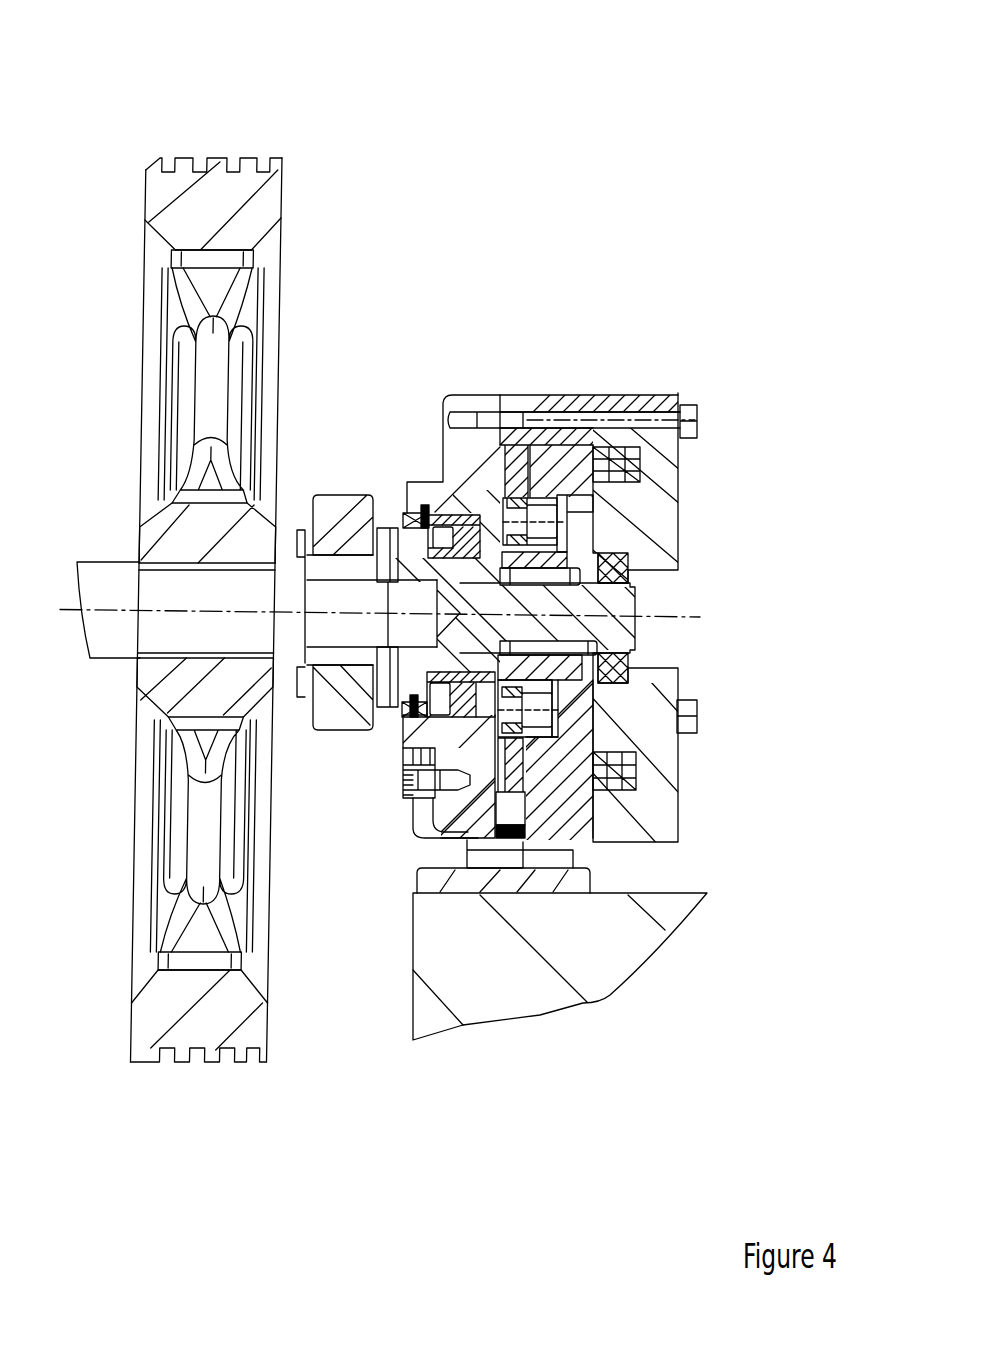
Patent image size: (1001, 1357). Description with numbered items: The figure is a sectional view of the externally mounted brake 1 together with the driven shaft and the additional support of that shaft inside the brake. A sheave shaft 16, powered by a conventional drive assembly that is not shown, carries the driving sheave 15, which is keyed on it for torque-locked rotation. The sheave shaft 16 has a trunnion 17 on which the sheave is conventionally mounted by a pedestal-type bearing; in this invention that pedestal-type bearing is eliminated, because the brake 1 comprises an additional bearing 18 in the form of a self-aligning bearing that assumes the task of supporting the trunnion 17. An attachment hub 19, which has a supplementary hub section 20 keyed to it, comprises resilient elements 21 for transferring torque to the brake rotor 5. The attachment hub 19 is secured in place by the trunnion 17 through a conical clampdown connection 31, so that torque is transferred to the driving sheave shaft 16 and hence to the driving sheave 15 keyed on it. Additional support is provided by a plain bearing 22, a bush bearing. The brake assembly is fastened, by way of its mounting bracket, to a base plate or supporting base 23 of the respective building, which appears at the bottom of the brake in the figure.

The brake 1 is at (645, 393).
The brake rotor 5 is at (460, 512).
The driving sheave 15 is at (208, 196).
The sheave shaft 16 is at (105, 562).
The trunnion 17 is at (330, 590).
The additional bearing 18 is at (440, 528).
The attachment hub 19 is at (588, 628).
The supplementary hub section 20 is at (597, 547).
The resilient elements 21 is at (550, 509).
The plain bearing 22 is at (640, 670).
The supporting base 23 is at (550, 947).
The conical clampdown connection 31 is at (320, 707).